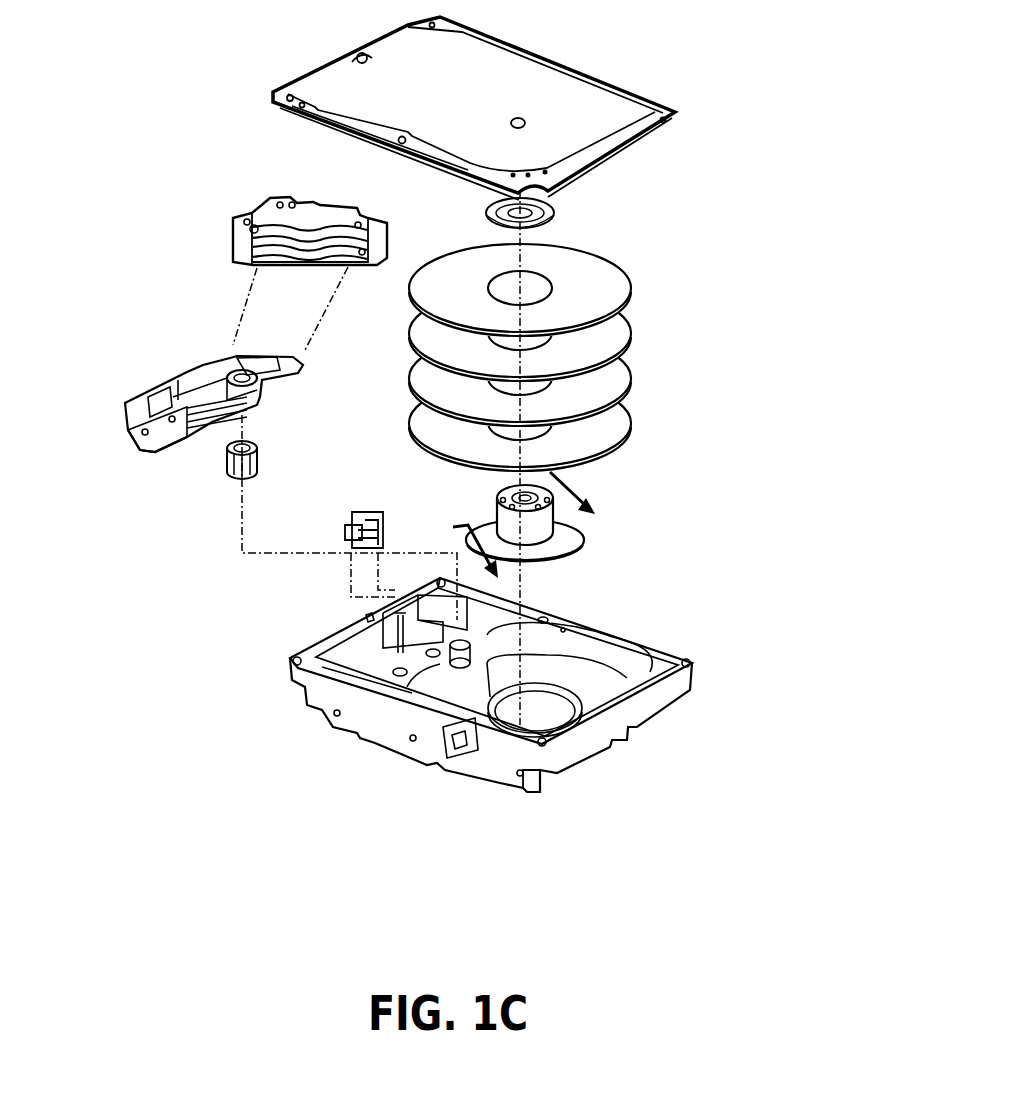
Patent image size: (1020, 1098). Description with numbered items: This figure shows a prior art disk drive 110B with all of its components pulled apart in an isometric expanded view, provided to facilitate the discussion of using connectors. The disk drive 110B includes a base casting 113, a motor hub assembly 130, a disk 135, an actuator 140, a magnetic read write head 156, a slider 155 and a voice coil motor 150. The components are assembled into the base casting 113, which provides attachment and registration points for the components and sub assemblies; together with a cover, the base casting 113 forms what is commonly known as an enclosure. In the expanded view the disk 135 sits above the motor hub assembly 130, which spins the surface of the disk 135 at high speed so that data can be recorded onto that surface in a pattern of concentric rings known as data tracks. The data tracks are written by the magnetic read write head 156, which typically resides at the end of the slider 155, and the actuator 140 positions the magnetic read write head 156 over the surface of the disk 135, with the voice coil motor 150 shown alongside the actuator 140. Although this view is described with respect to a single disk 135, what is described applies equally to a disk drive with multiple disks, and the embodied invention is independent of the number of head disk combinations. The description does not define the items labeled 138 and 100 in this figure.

The disk drive 110B is at (682, 777).
The base casting 113 is at (303, 680).
The motor hub assembly 130 is at (560, 540).
The disk 135 is at (640, 458).
The disk stack 138 is at (685, 470).
The disk drive assembly 100 is at (605, 515).
The actuator 140 is at (227, 365).
The voice coil motor 150 is at (228, 207).
The slider 155 is at (183, 455).
The magnetic read write head 156 is at (177, 453).